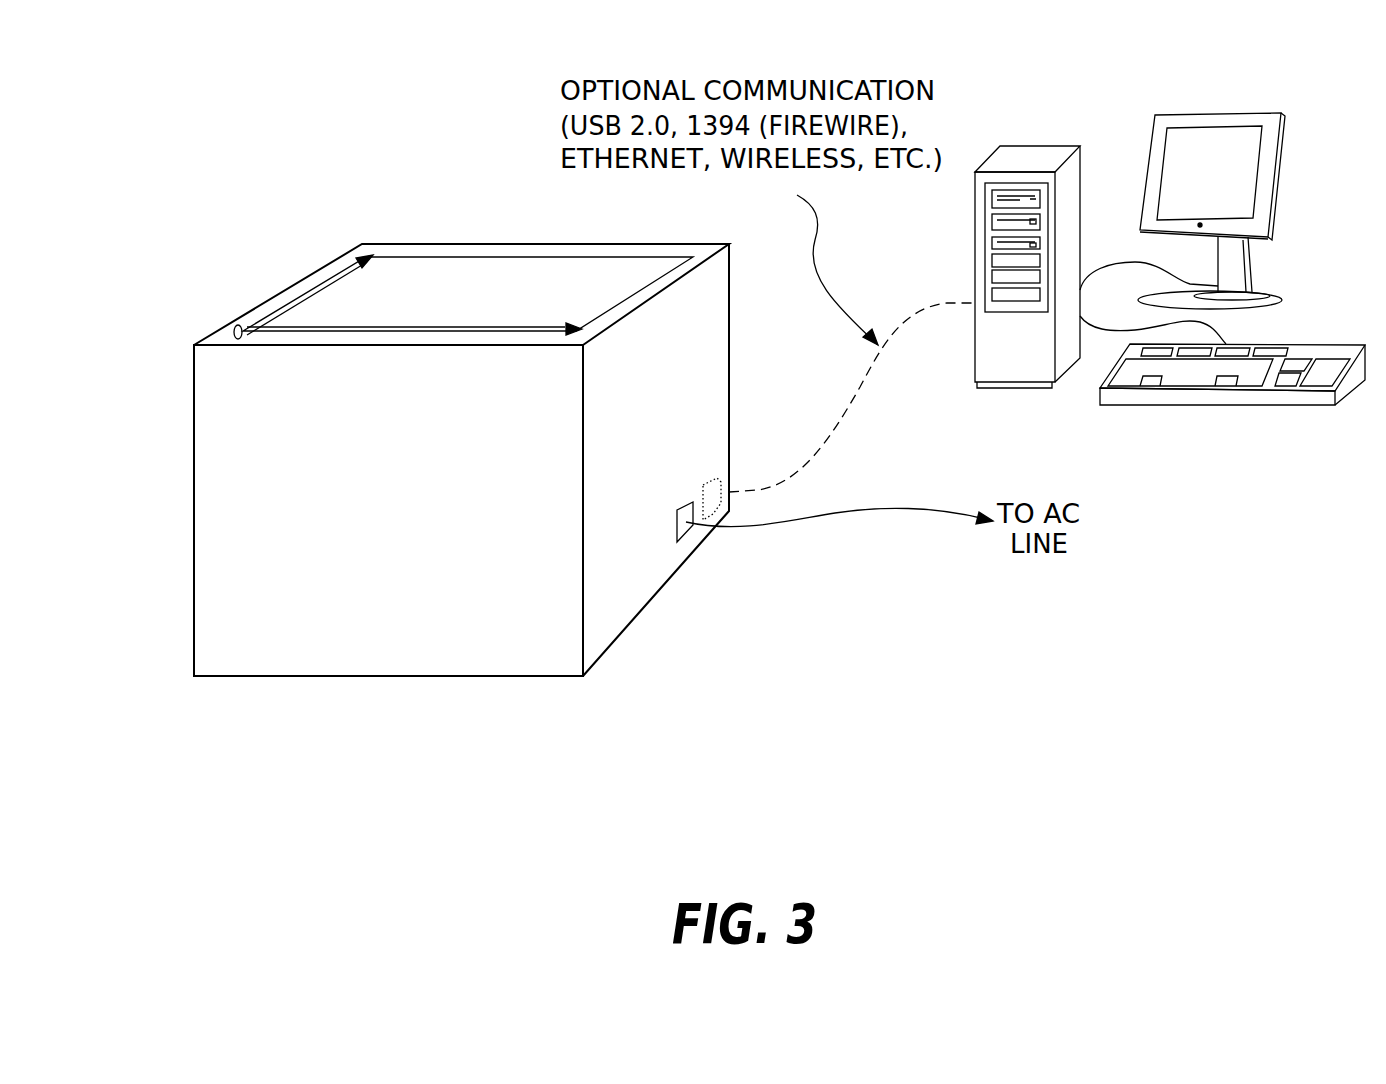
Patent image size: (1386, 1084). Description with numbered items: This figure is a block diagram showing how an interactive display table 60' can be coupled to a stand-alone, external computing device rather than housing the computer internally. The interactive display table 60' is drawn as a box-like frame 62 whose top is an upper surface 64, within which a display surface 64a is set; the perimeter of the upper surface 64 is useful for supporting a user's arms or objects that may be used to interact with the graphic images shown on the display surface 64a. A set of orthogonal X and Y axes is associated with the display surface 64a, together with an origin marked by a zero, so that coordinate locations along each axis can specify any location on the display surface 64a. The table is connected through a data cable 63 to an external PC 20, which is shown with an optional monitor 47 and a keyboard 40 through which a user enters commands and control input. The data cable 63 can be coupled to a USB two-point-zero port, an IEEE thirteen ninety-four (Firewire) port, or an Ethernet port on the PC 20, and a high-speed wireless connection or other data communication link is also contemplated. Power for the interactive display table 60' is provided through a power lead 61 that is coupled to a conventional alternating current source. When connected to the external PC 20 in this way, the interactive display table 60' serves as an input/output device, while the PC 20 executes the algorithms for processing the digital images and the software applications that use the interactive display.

The PC 20 is at (1040, 146).
The monitor 47 is at (1277, 170).
The keyboard 40 is at (1318, 344).
The interactive display table 60' is at (411, 399).
The frame 62 is at (194, 452).
The upper surface 64 is at (318, 268).
The display surface 64a is at (490, 307).
The data cable 63 is at (860, 388).
The power lead 61 is at (845, 513).